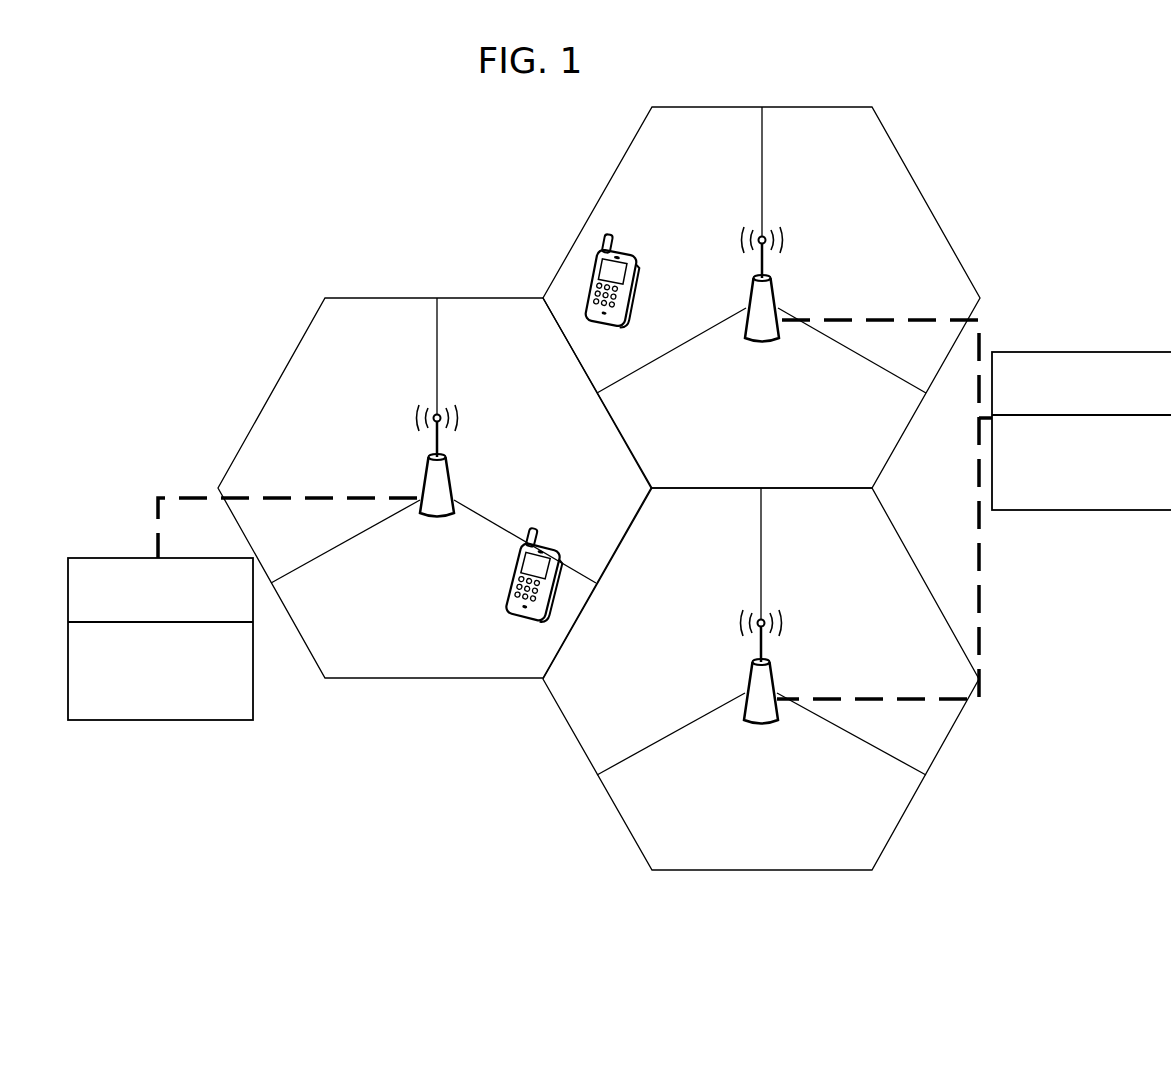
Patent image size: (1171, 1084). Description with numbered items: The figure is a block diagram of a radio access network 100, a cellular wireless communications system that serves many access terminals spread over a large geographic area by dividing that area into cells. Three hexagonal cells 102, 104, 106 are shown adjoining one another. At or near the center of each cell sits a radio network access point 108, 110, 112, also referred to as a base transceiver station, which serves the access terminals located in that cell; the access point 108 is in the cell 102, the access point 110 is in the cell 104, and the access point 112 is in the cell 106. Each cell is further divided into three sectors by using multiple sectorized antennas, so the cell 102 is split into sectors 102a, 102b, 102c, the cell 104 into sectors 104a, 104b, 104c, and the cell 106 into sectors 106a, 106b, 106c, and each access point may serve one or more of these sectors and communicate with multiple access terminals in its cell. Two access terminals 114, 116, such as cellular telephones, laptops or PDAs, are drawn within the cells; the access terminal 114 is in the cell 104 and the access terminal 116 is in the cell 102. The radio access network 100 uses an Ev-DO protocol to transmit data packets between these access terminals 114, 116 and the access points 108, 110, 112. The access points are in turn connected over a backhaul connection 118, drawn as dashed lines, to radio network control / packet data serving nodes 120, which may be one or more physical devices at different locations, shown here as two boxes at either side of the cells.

The radio access network 100 is at (366, 183).
The cell 102 is at (266, 368).
The sector 102a is at (360, 448).
The sector 102b is at (543, 448).
The sector 102c is at (463, 653).
The cell 104 is at (915, 163).
The sector 104a is at (710, 244).
The sector 104b is at (892, 260).
The sector 104c is at (805, 431).
The cell 106 is at (563, 777).
The sector 106a is at (703, 613).
The sector 106b is at (884, 641).
The sector 106c is at (790, 830).
The radio network access point 108 is at (418, 513).
The radio network access point 110 is at (743, 338).
The radio network access point 112 is at (742, 720).
The access terminal 114 is at (636, 320).
The access terminal 116 is at (511, 608).
The backhaul connection 118 is at (158, 513).
The radio network control / packet data serving nodes 120 is at (619, 536).